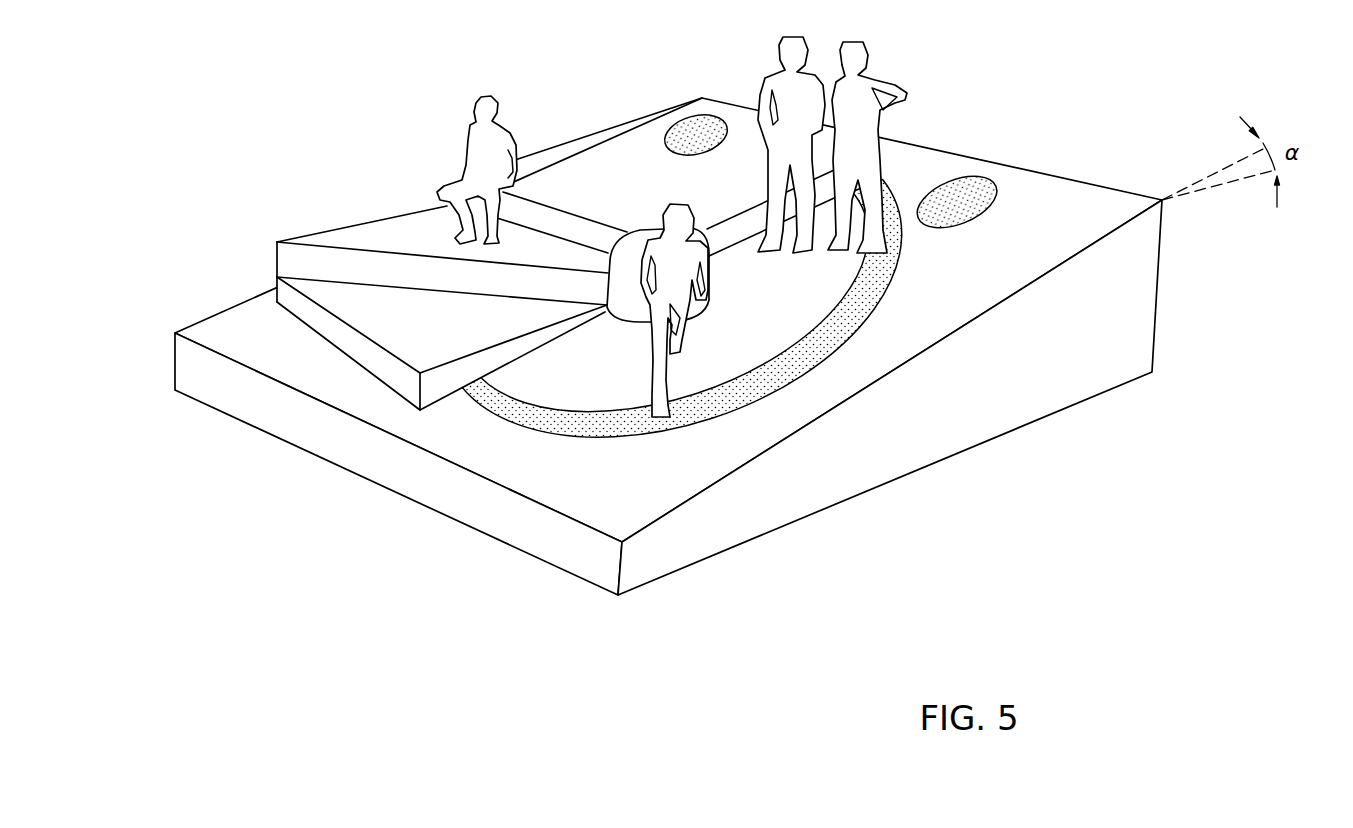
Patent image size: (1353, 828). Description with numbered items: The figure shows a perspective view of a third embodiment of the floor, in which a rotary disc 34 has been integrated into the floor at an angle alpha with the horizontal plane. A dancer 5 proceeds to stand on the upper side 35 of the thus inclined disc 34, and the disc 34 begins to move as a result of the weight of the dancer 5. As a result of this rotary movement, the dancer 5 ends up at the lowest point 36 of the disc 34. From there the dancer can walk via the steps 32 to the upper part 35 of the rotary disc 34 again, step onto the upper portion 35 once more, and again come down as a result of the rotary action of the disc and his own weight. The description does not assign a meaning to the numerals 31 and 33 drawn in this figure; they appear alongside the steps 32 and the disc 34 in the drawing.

The dancer 5 is at (770, 78).
The rotatable seating assembly 31 is at (444, 357).
The steps 32 is at (347, 238).
The platform base 33 is at (668, 385).
The rotary disc 34 is at (828, 362).
The upper side of the rotary disc 35 is at (810, 290).
The lowest point 36 is at (505, 355).